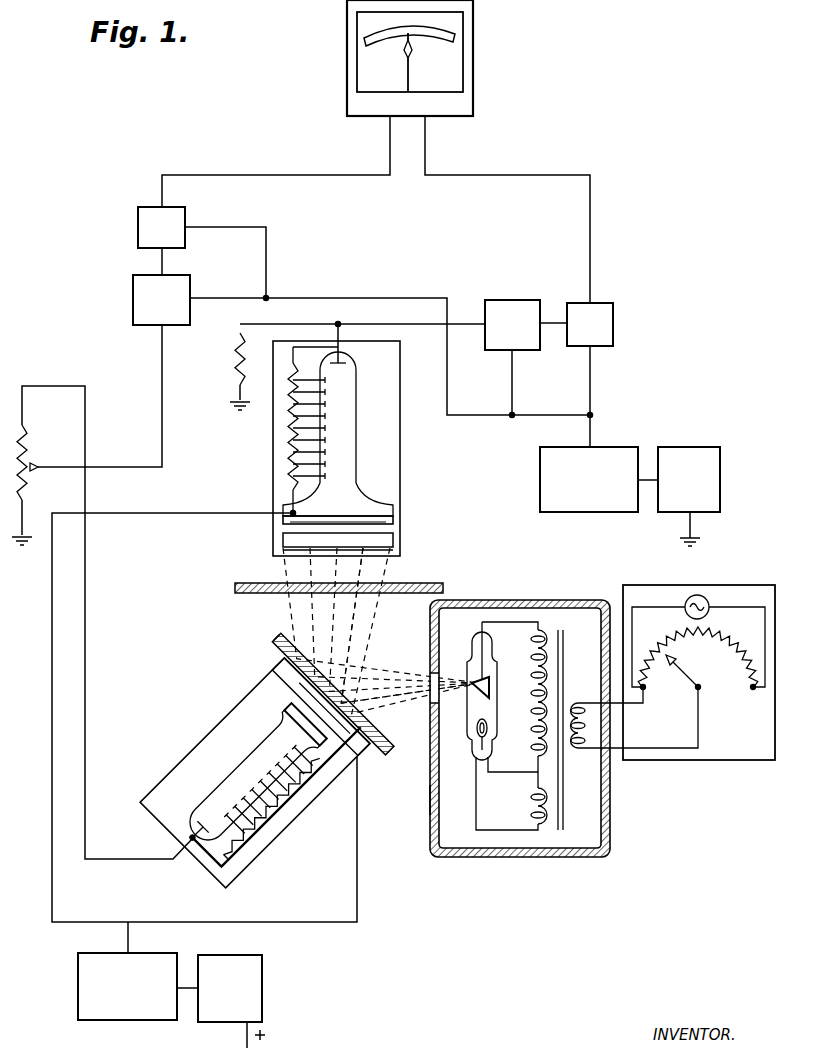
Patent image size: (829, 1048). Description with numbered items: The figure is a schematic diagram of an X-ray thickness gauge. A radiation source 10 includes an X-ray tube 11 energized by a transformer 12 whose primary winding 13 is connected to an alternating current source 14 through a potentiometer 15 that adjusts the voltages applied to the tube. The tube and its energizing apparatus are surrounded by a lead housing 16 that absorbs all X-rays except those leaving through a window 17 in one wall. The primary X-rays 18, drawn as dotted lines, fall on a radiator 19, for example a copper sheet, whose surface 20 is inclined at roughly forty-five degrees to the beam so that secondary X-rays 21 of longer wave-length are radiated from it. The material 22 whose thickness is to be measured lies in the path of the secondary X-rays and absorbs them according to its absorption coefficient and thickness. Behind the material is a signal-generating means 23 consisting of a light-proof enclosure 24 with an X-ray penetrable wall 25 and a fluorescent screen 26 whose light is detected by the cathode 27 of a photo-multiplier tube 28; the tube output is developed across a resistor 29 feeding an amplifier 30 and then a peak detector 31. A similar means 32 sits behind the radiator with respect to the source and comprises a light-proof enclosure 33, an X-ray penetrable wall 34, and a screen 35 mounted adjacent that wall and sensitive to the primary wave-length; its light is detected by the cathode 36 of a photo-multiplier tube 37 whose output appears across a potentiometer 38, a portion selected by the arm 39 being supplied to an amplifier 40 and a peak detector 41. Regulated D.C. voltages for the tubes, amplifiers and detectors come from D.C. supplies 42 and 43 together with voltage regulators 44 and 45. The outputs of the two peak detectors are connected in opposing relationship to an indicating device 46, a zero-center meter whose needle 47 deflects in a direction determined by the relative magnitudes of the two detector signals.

The radiation source 10 is at (514, 863).
The X-ray tube 11 is at (468, 640).
The transformer 12 is at (565, 630).
The primary winding 13 is at (578, 702).
The alternating current source 14 is at (686, 611).
The potentiometer 15 is at (717, 675).
The housing 16 is at (430, 796).
The window 17 is at (443, 712).
The primary X-rays 18 is at (402, 678).
The radiator 19 is at (273, 641).
The surface 20 is at (283, 635).
The secondary X-rays 21 is at (380, 631).
The material 22 is at (410, 584).
The means for generating an electrical signal 23 is at (409, 494).
The light-proof enclosure 24 is at (401, 525).
The X-ray penetrable wall 25 is at (401, 556).
The screen 26 is at (283, 540).
The cathode 27 is at (356, 517).
The photo-multiplier tube 28 is at (357, 432).
The resistor 29 is at (237, 350).
The amplifier 30 is at (505, 300).
The peak detector 31 is at (605, 303).
The means for generating an electrical signal 32 is at (219, 720).
The light-proof enclosure 33 is at (285, 828).
The X-ray penetrable wall 34 is at (364, 746).
The screen 35 is at (283, 672).
The cathode 36 is at (291, 713).
The photo-multiplier tube 37 is at (245, 762).
The potentiometer 38 is at (30, 442).
The arm 39 is at (60, 458).
The amplifier 40 is at (133, 295).
The peak detector 41 is at (138, 227).
The D.C. supply 42 is at (262, 985).
The D.C. supply 43 is at (688, 447).
The voltage regulator 44 is at (78, 983).
The voltage regulator 45 is at (610, 447).
The indicating device 46 is at (473, 68).
The needle 47 is at (411, 72).